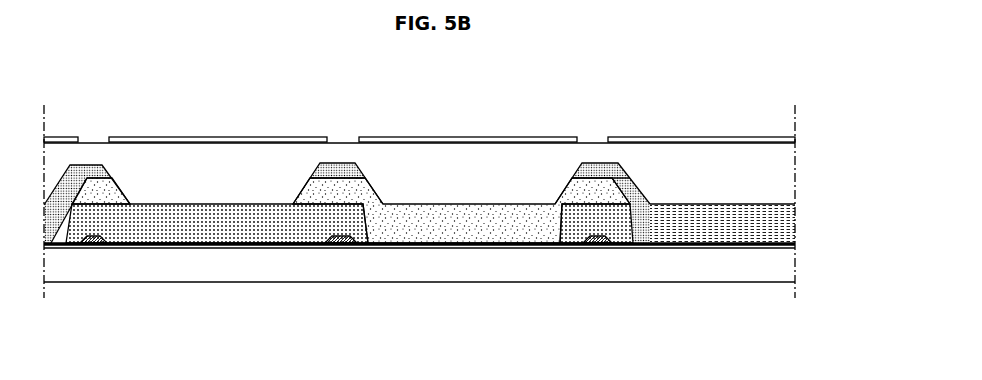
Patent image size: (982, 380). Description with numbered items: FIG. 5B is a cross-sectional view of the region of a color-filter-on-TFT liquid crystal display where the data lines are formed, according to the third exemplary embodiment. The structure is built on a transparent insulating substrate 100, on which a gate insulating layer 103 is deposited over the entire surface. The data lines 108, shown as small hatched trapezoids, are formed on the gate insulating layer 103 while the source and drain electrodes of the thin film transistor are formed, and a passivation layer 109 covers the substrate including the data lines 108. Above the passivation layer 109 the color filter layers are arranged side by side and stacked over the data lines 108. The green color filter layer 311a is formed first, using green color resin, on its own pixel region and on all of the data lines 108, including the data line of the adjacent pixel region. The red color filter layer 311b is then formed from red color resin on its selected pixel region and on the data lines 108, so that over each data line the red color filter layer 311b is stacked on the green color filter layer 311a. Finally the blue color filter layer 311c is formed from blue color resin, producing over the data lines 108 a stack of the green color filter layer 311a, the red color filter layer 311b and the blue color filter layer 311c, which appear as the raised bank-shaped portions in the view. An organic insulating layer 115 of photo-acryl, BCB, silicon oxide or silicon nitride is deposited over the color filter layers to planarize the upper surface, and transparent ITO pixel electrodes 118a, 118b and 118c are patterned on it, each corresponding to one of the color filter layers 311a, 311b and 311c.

The transparent insulating substrate 100 is at (795, 265).
The gate insulating layer 103 is at (795, 248).
The data lines 108 is at (88, 244).
The passivation layer 109 is at (795, 244).
The organic insulating layer 115 is at (795, 190).
The pixel electrode 118a is at (222, 137).
The pixel electrode 118b is at (475, 137).
The pixel electrode 118c is at (698, 137).
The green color filter layer 311a is at (210, 247).
The red color filter layer 311b is at (465, 247).
The blue color filter layer 311c is at (53, 226).